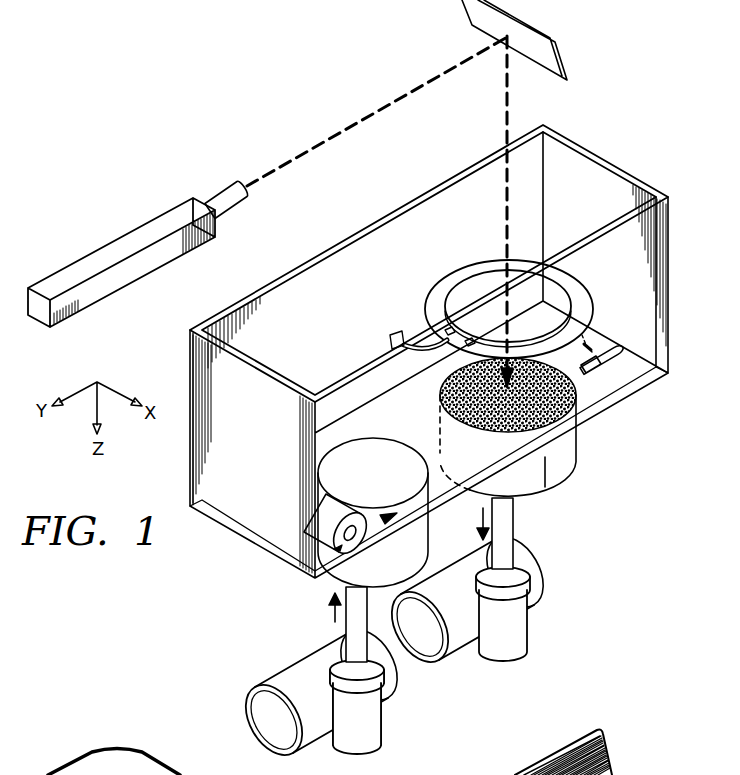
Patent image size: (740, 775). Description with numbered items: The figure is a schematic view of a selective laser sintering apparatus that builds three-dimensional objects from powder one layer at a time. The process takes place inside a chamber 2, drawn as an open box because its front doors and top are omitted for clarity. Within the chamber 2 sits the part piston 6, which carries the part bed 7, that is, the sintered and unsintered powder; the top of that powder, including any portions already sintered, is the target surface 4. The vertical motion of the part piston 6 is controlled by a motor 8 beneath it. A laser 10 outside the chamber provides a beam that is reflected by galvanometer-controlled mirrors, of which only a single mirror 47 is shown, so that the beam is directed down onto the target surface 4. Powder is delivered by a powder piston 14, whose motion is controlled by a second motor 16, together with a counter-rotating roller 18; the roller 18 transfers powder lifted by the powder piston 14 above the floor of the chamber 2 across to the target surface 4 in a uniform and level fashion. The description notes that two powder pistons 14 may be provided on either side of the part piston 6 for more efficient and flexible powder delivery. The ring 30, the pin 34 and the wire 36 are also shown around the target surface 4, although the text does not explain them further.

The chamber 2 is at (626, 178).
The target surface 4 is at (443, 404).
The part piston 6 is at (578, 466).
The part bed 7 is at (440, 440).
The motor 8 is at (535, 625).
The laser 10 is at (101, 245).
The powder piston 14 is at (337, 581).
The motor 16 is at (386, 720).
The counter-rotating roller 18 is at (352, 512).
The ring 30 is at (437, 291).
The pin 34 is at (617, 370).
The wire 36 is at (600, 346).
The mirror 47 is at (567, 62).